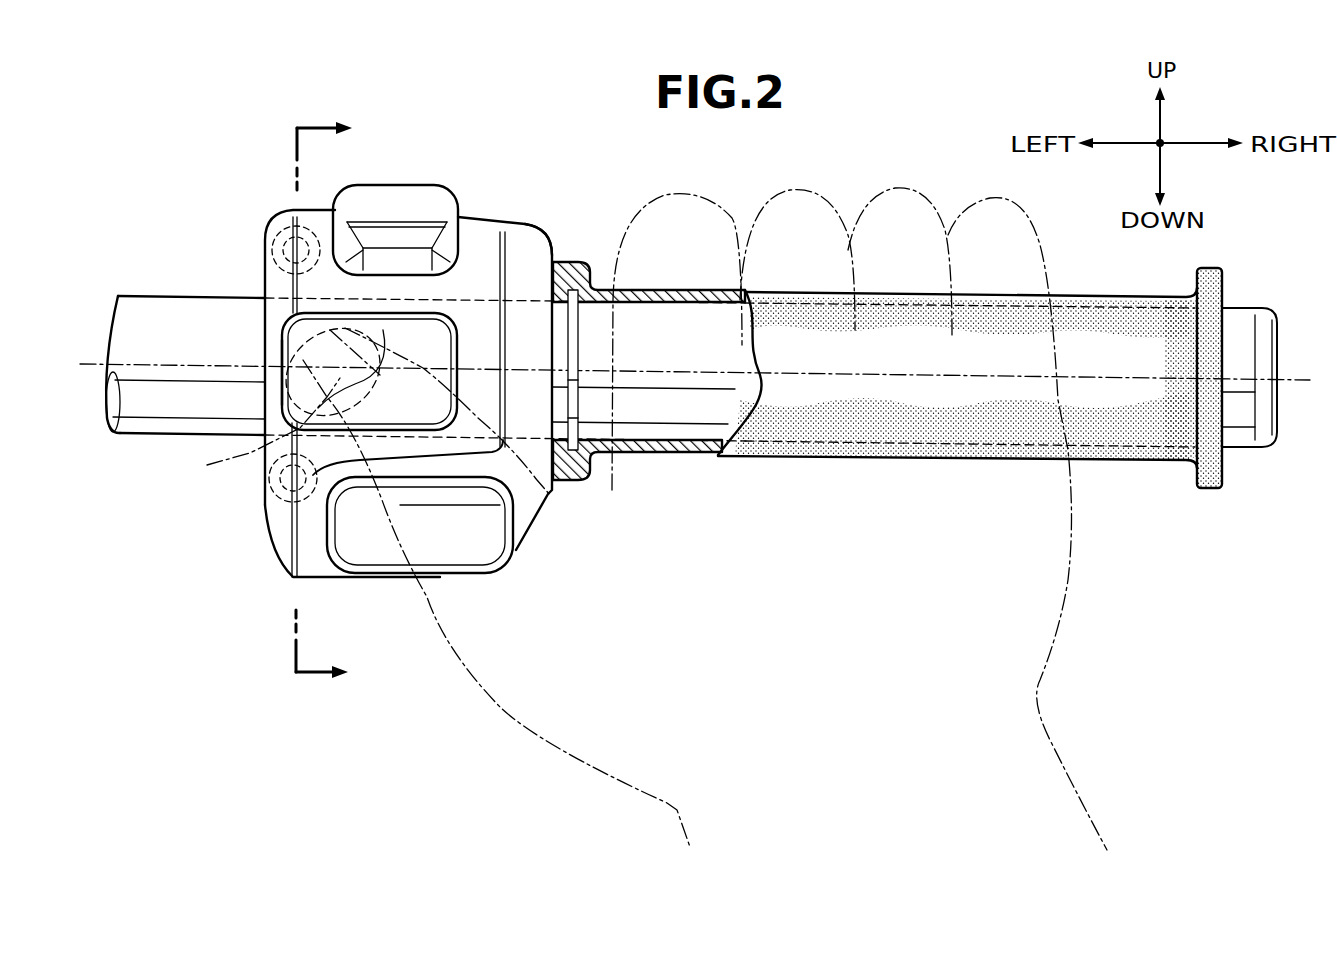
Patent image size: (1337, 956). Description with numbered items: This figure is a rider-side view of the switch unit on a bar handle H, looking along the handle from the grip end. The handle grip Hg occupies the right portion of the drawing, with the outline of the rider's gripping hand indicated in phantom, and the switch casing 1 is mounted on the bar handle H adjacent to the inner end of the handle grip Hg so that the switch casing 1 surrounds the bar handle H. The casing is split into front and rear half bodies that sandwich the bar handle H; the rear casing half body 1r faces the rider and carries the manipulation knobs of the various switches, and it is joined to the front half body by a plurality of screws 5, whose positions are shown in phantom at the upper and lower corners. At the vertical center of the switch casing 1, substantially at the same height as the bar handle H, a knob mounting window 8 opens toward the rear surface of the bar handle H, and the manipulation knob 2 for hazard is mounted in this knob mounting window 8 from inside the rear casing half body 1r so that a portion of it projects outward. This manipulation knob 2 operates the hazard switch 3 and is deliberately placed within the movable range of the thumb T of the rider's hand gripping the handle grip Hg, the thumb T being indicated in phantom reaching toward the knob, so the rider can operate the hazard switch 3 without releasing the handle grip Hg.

The switch casing 1 is at (490, 237).
The rear casing half body 1r is at (530, 242).
The manipulation knob for hazard 2 is at (440, 348).
The hazard switch 3 is at (303, 405).
The screws 5 is at (282, 237).
The knob mounting window 8 is at (287, 385).
The bar handle H is at (180, 305).
The handle grip Hg is at (1112, 456).
The thumb T is at (436, 579).